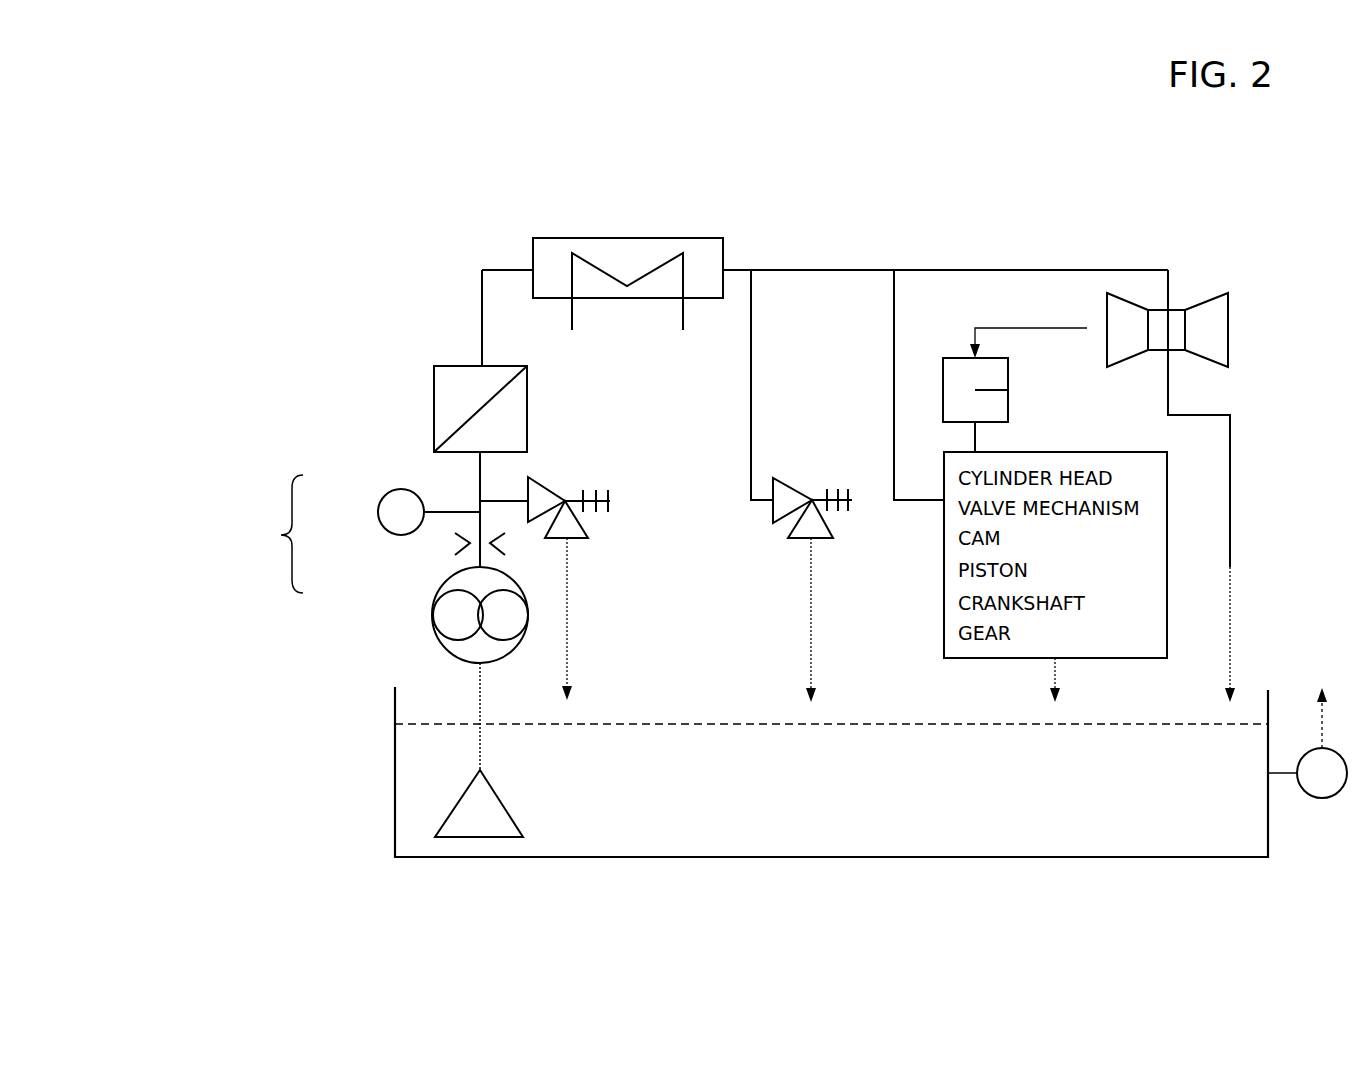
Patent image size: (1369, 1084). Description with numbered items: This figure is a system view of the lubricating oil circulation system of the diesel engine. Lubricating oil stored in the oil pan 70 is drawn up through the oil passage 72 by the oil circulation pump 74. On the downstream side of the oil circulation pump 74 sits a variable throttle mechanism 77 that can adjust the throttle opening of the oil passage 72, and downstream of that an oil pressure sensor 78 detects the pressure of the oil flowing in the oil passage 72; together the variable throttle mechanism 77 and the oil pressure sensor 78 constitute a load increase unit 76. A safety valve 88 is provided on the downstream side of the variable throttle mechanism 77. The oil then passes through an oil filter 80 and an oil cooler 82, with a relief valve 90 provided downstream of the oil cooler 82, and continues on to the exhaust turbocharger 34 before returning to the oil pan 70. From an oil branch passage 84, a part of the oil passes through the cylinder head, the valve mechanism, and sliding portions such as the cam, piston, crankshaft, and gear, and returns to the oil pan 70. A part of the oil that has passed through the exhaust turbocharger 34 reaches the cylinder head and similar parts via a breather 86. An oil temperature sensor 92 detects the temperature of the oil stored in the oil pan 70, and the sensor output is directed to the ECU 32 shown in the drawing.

The ECU 32 is at (1321, 703).
The exhaust turbocharger 34 is at (1200, 298).
The oil pan 70 is at (1110, 858).
The oil passage 72 is at (477, 692).
The oil circulation pump 74 is at (433, 614).
The load increase unit 76 is at (170, 534).
The variable throttle mechanism 77 is at (455, 543).
The oil pressure sensor 78 is at (378, 507).
The oil filter 80 is at (527, 396).
The oil cooler 82 is at (723, 238).
The oil branch passage 84 is at (894, 355).
The breather 86 is at (958, 358).
The safety valve 88 is at (582, 522).
The relief valve 90 is at (828, 525).
The oil temperature sensor 92 is at (1327, 800).